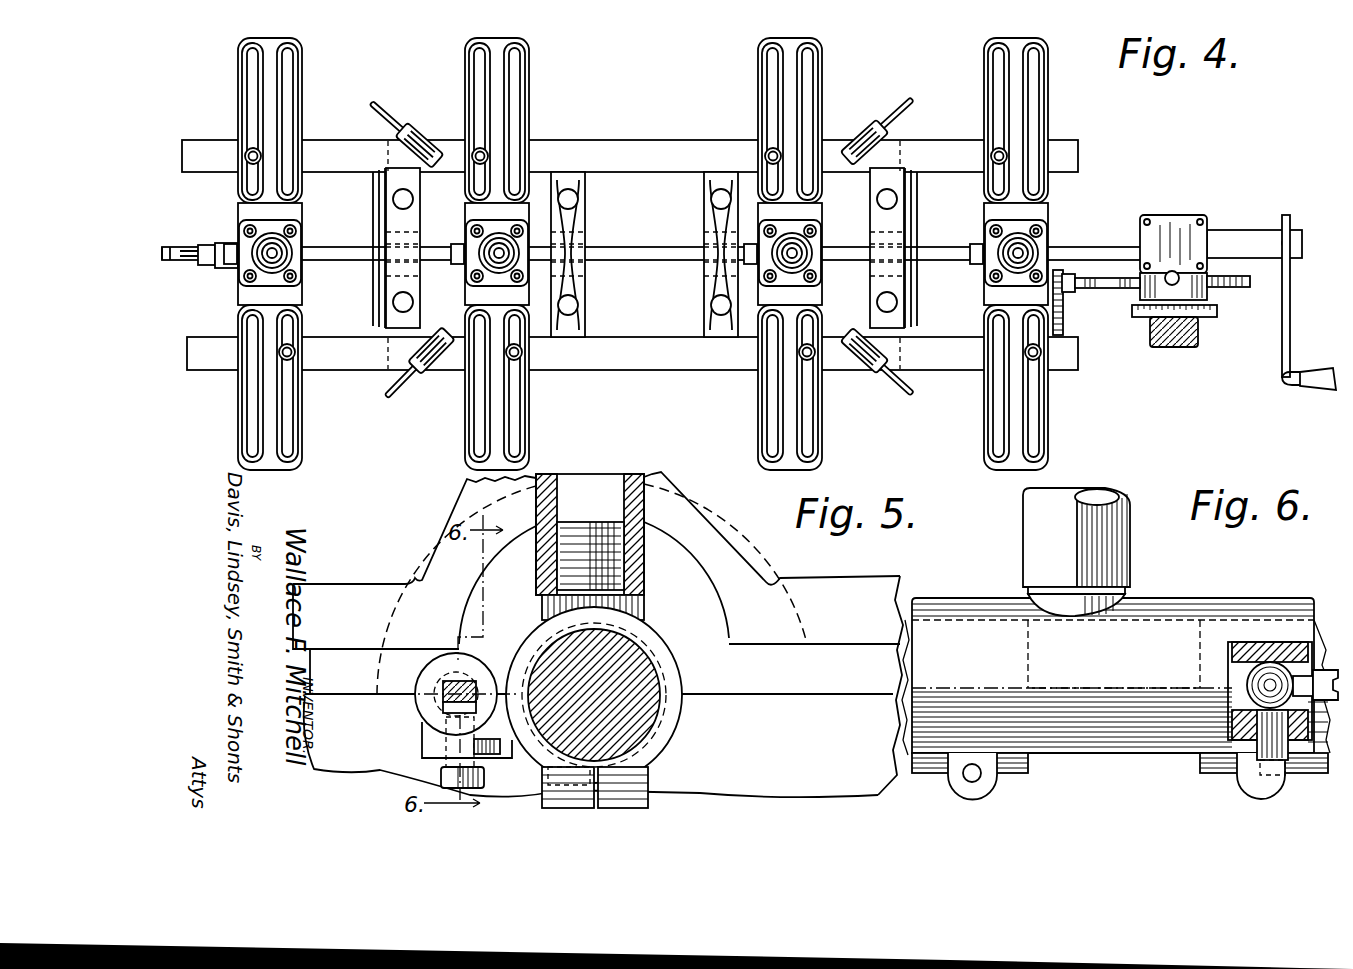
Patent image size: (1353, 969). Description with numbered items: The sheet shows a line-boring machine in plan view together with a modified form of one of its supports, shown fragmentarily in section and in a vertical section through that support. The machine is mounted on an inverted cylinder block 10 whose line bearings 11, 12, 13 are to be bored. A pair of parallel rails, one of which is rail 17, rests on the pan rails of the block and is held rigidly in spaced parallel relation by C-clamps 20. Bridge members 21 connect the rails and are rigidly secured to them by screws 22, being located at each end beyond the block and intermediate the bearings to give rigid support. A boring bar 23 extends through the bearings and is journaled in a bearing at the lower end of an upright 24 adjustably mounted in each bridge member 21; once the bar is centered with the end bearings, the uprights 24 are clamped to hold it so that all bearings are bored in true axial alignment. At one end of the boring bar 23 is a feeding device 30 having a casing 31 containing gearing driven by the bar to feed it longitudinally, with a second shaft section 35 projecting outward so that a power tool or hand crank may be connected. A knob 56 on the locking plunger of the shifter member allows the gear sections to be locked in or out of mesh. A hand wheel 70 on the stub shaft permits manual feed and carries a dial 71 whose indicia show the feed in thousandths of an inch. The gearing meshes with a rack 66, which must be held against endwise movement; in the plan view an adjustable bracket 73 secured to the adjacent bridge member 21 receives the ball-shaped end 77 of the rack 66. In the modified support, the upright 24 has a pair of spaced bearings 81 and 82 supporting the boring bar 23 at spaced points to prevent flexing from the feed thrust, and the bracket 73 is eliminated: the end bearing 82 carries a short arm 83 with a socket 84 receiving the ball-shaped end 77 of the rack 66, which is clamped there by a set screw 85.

In FIG. 4, the cylinder block 10 is at (916, 212).
In FIG. 4, the line bearing 11 is at (376, 212).
In FIG. 4, the line bearing 12 is at (580, 222).
In FIG. 4, the line bearing 13 is at (705, 225).
In FIG. 4, the rail 17 is at (652, 140).
In FIG. 5, the rail 17 is at (885, 664).
In FIG. 4, the C-clamp 20 is at (405, 123).
In FIG. 4, the bridge member 21 is at (248, 297).
In FIG. 5, the bridge member 21 is at (348, 584).
In FIG. 4, the screw 22 is at (990, 155).
In FIG. 4, the boring bar 23 is at (661, 262).
In FIG. 5, the boring bar 23 is at (646, 722).
In FIG. 6, the boring bar 23 is at (1122, 733).
In FIG. 4, the upright 24 is at (262, 250).
In FIG. 5, the upright 24 is at (630, 476).
In FIG. 6, the upright 24 is at (1033, 517).
In FIG. 4, the feeding device 30 is at (1193, 210).
In FIG. 4, the casing 31 is at (1207, 276).
In FIG. 4, the second shaft section 35 is at (1248, 233).
In FIG. 4, the knob 56 is at (1172, 271).
In FIG. 4, the rack 66 is at (1120, 290).
In FIG. 5, the rack 66 is at (446, 690).
In FIG. 6, the rack 66 is at (1322, 670).
In FIG. 4, the hand wheel 70 is at (1200, 342).
In FIG. 4, the dial 71 is at (1218, 310).
In FIG. 4, the adjustable bracket 73 is at (1075, 314).
In FIG. 5, the ball-shaped end 77 is at (472, 698).
In FIG. 6, the ball-shaped end 77 is at (1262, 668).
In FIG. 6, the bearing 81 is at (1015, 735).
In FIG. 5, the end bearing 82 is at (664, 708).
In FIG. 6, the end bearing 82 is at (1212, 730).
In FIG. 5, the short arm 83 is at (420, 712).
In FIG. 6, the short arm 83 is at (1276, 648).
In FIG. 6, the socket 84 is at (1232, 672).
In FIG. 6, the set screw 85 is at (1290, 762).